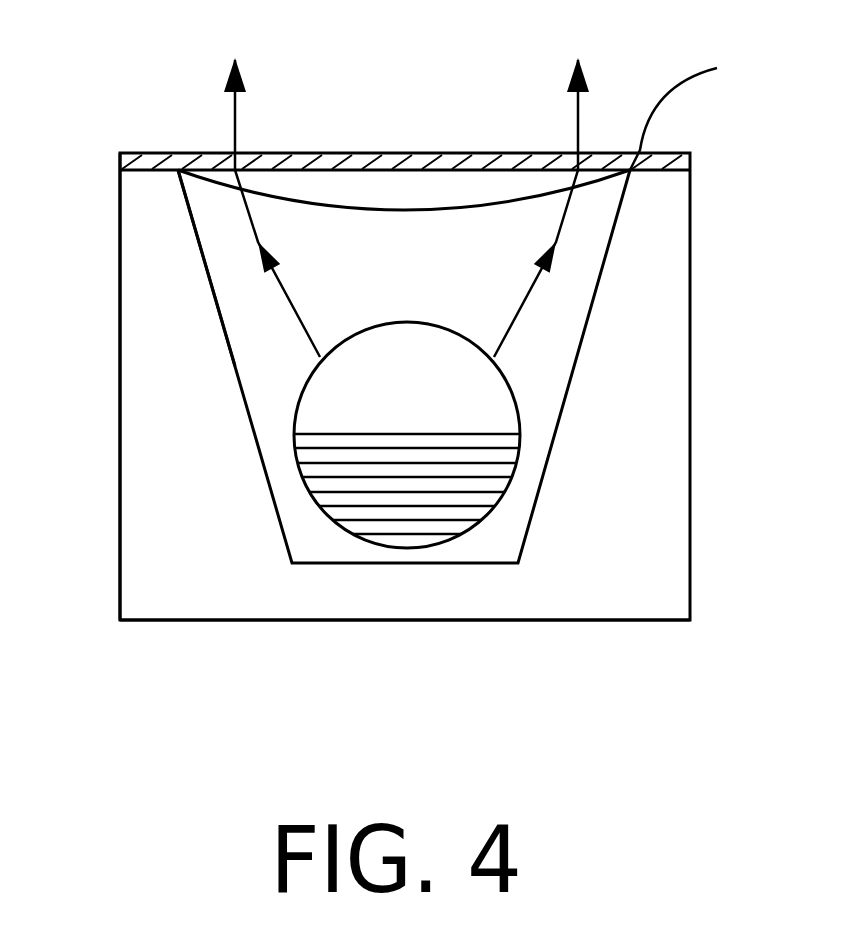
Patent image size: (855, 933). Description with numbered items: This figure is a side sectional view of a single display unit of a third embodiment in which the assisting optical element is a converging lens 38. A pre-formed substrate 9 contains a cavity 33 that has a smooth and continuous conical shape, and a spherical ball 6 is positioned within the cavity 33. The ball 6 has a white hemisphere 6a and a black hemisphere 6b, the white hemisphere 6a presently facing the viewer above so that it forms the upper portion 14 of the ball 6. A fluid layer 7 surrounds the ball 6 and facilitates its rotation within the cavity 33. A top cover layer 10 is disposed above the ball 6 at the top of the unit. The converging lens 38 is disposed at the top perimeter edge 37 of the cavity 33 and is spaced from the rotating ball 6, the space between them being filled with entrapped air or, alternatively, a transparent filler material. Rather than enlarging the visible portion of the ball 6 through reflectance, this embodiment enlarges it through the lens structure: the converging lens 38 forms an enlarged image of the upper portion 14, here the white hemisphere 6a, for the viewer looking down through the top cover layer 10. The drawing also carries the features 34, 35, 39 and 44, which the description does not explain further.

The spherical ball 6 is at (385, 323).
The white hemisphere 6a is at (420, 365).
The black hemisphere 6b is at (407, 512).
The fluid layer 7 is at (548, 378).
The pre-formed substrate 9 is at (640, 531).
The top cover layer 10 is at (335, 153).
The upper portion of the ball 14 is at (356, 345).
The cavity 33 is at (213, 300).
The housing outer wall 34 is at (120, 218).
The light ray 35 is at (266, 184).
The top perimeter edge of the cavity 37 is at (690, 101).
The converging lens 38 is at (513, 224).
The lens surface 39 is at (450, 210).
The housing bottom 44 is at (220, 648).